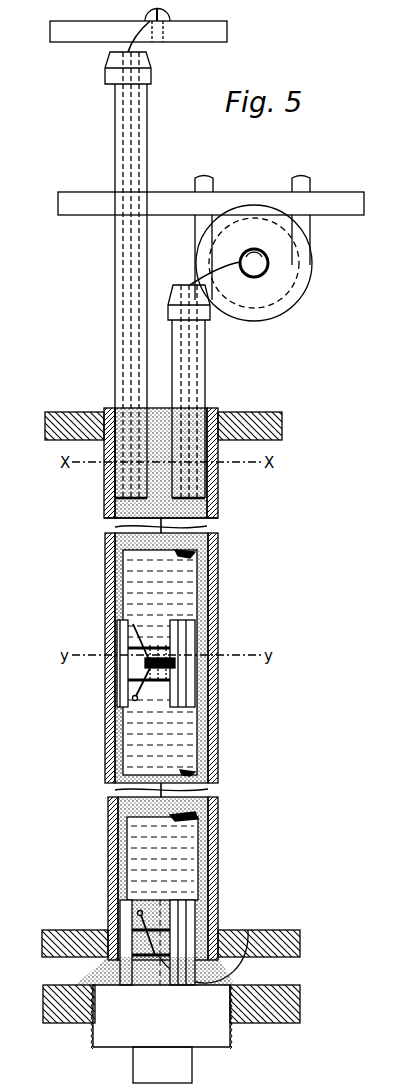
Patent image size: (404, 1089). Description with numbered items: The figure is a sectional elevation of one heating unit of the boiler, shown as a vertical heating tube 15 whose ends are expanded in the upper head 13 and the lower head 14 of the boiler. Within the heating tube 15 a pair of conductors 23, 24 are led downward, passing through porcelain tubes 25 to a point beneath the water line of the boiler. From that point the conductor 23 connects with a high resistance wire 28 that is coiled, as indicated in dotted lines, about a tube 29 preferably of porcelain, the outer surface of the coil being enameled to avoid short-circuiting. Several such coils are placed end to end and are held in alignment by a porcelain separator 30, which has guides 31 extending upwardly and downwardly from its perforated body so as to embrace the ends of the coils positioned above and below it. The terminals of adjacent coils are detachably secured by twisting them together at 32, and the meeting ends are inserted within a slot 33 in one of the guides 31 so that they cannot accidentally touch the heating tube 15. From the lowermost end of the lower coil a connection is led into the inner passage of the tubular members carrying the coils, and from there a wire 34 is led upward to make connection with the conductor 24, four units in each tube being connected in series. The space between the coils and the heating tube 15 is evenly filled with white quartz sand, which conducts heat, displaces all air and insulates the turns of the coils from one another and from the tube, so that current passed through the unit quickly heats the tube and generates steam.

The upper head 13 is at (82, 424).
The lower head 14 is at (66, 946).
The heating tube 15 is at (212, 586).
The conductor 23 is at (126, 50).
The conductor 24 is at (190, 285).
The porcelain tube 25 is at (172, 370).
The high resistance wire 28 is at (138, 632).
The tube 29 is at (140, 572).
The porcelain separator 30 is at (197, 668).
The guide 31 is at (120, 695).
The twisted terminal connection 32 is at (160, 645).
The slot 33 is at (150, 695).
The wire 34 is at (185, 525).